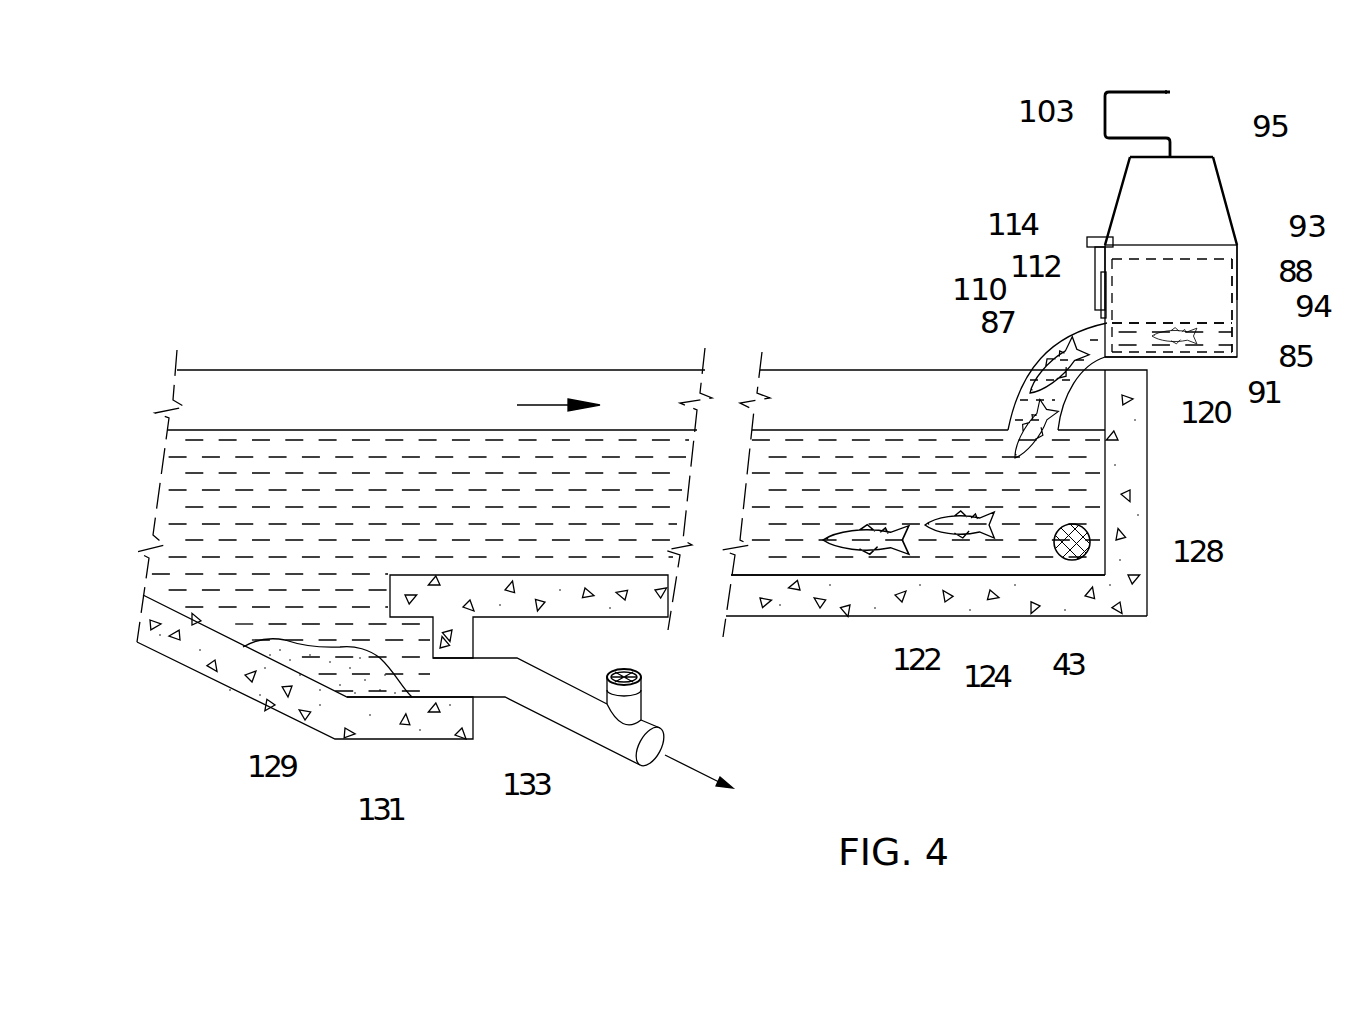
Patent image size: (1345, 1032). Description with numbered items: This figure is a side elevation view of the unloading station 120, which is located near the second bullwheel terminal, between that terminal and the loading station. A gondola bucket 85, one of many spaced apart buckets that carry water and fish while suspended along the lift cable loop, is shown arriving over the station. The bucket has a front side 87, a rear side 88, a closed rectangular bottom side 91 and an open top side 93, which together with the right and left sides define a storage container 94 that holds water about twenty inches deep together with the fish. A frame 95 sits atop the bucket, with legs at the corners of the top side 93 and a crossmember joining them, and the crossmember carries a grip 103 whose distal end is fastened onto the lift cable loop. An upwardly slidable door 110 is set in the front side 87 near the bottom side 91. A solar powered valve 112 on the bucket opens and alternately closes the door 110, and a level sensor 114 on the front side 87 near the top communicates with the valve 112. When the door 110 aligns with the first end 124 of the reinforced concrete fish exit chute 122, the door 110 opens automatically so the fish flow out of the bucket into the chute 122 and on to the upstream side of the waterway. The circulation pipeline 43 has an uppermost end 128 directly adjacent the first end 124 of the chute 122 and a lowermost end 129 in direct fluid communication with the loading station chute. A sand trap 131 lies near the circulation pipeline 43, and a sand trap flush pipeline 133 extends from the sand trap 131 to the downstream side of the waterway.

The grip 103 is at (1105, 112).
The frame 95 is at (1272, 143).
The level sensor 114 is at (1088, 242).
The open top side 93 is at (1185, 246).
The solar powered valve 112 is at (1095, 260).
The rear side 88 is at (1278, 268).
The upwardly slidable door 110 is at (1103, 298).
The storage container 94 is at (1295, 305).
The front side 87 is at (1113, 323).
The gondola bucket 85 is at (1278, 356).
The closed rectangular bottom side 91 is at (1247, 385).
The unloading station 120 is at (1180, 412).
The uppermost end 128 is at (1097, 539).
The fish exit chute 122 is at (917, 638).
The first end 124 is at (987, 653).
The circulation pipeline 43 is at (1097, 569).
The lowermost end 129 is at (270, 743).
The sand trap 131 is at (382, 783).
The sand trap flush pipeline 133 is at (527, 763).